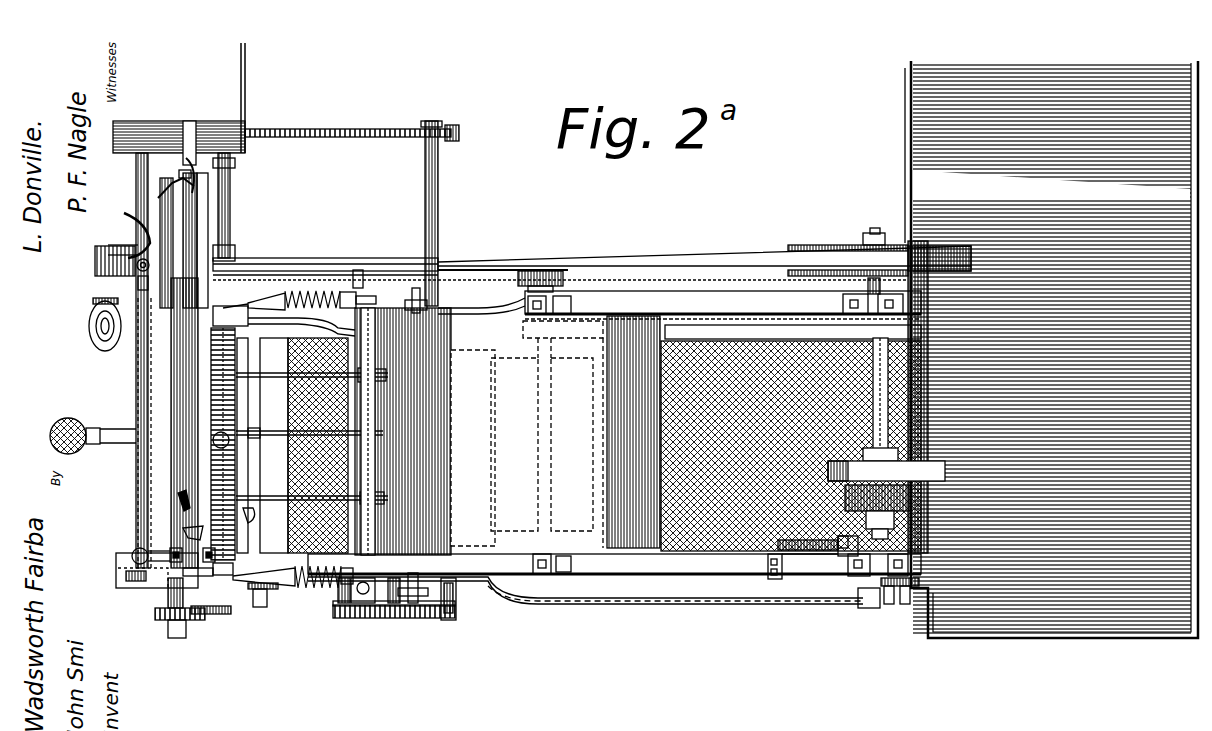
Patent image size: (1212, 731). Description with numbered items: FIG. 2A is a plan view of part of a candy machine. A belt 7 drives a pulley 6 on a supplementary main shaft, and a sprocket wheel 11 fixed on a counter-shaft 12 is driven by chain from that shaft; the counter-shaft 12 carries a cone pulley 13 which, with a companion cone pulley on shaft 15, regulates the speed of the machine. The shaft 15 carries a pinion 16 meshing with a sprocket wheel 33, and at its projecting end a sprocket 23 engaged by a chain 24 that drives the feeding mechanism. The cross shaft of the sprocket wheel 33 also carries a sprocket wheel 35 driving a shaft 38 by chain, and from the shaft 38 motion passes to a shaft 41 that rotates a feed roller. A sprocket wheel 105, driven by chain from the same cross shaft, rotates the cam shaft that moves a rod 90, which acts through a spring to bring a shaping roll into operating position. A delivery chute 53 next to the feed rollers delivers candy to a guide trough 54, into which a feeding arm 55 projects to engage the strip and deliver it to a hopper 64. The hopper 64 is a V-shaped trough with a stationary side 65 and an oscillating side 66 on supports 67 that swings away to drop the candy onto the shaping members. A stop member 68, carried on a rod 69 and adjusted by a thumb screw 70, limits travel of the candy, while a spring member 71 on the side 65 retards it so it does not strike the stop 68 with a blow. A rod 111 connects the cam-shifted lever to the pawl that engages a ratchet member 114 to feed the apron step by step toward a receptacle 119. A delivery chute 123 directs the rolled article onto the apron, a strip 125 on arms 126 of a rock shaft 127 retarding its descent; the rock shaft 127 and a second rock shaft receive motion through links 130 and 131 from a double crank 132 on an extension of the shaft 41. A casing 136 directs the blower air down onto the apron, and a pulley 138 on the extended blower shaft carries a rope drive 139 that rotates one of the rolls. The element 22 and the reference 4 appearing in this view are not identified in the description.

The receptacle 119 is at (1051, 349).
The delivery chute 53 is at (185, 120).
The guide trough 54 is at (178, 165).
The chain 24 is at (325, 121).
The sprocket 23 is at (417, 137).
The feeding arm 55 is at (190, 225).
The shaft 41 is at (195, 232).
The pulley 6 is at (96, 238).
The hub 22 is at (87, 324).
The shaft 38 is at (130, 383).
The stationary side 65 is at (175, 411).
The oscillating side 66 is at (200, 452).
The hopper 64 is at (190, 470).
The spring member 71 is at (170, 495).
The stop member 68 is at (175, 523).
The thumb screw 70 is at (175, 545).
The rod 69 is at (172, 565).
The counter-shaft 12 is at (292, 600).
The supports 67 is at (218, 565).
The second sprocket wheel 11 is at (268, 595).
The link 130 is at (320, 250).
The double crank 132 is at (220, 262).
The link 131 is at (275, 266).
The sprocket wheel 35 is at (352, 262).
The shaft 15 is at (428, 250).
The belt 7 is at (644, 257).
The rope drive 139 is at (466, 262).
The pulley 138 is at (545, 265).
The strip 125 is at (232, 352).
The arms 126 is at (248, 405).
The delivery chute 123 is at (255, 413).
The rock shaft 127 is at (368, 330).
The casing 136 is at (527, 434).
The cone pulley 13 is at (880, 388).
The section line 4 is at (942, 458).
The rod 111 is at (594, 597).
The rotatable member 114 is at (880, 590).
The sprocket wheel 105 is at (345, 598).
The sprocket wheel 33 is at (383, 610).
The rod 90 is at (358, 610).
The pinion 16 is at (440, 612).